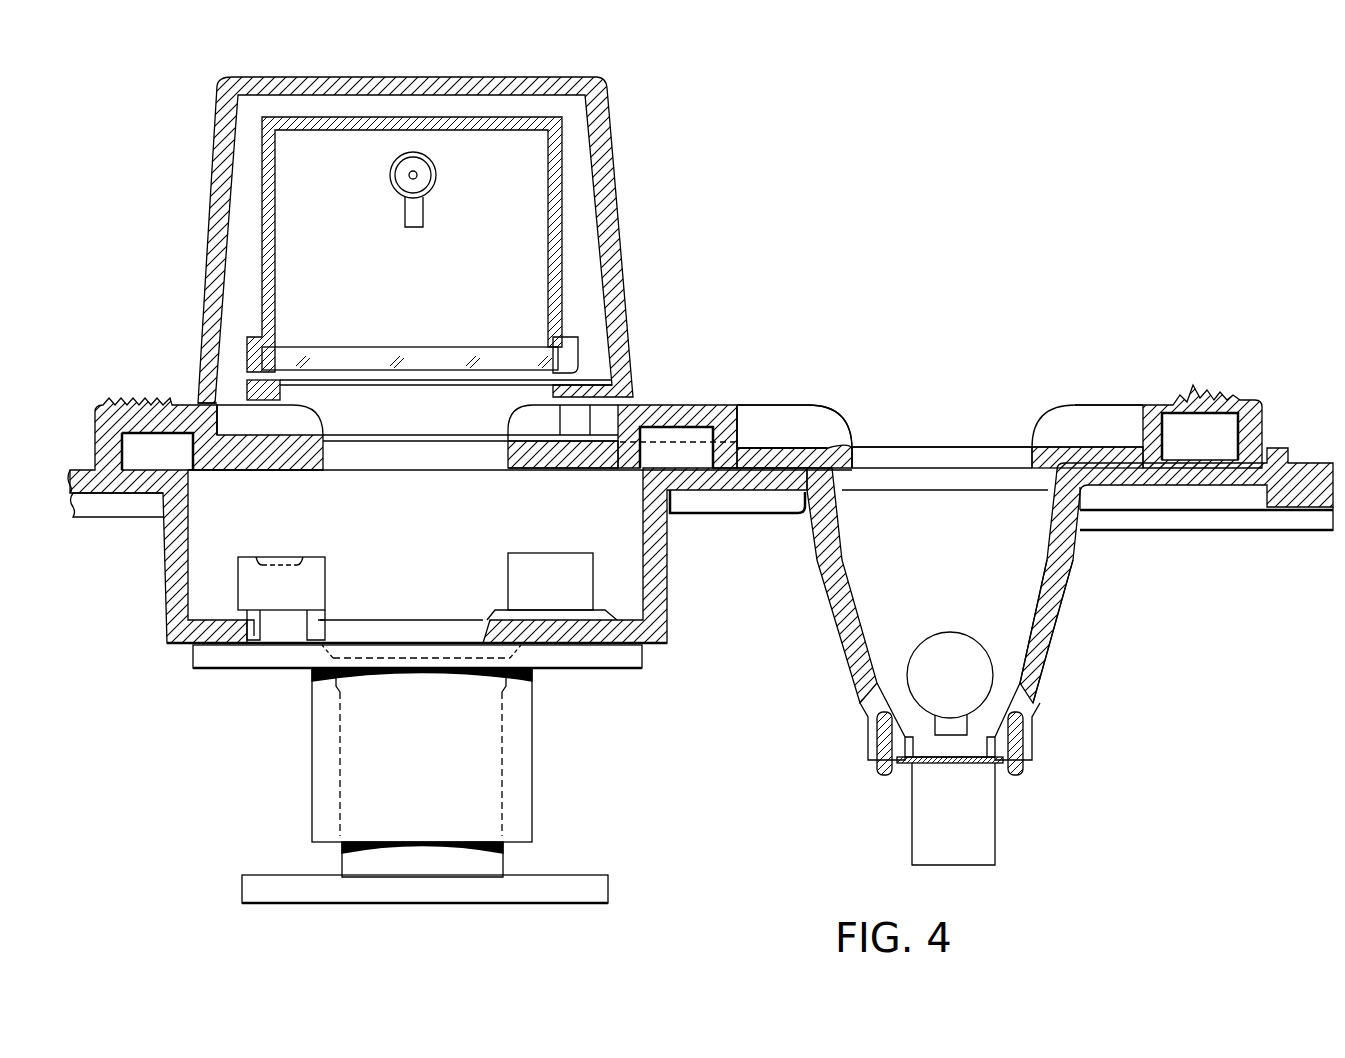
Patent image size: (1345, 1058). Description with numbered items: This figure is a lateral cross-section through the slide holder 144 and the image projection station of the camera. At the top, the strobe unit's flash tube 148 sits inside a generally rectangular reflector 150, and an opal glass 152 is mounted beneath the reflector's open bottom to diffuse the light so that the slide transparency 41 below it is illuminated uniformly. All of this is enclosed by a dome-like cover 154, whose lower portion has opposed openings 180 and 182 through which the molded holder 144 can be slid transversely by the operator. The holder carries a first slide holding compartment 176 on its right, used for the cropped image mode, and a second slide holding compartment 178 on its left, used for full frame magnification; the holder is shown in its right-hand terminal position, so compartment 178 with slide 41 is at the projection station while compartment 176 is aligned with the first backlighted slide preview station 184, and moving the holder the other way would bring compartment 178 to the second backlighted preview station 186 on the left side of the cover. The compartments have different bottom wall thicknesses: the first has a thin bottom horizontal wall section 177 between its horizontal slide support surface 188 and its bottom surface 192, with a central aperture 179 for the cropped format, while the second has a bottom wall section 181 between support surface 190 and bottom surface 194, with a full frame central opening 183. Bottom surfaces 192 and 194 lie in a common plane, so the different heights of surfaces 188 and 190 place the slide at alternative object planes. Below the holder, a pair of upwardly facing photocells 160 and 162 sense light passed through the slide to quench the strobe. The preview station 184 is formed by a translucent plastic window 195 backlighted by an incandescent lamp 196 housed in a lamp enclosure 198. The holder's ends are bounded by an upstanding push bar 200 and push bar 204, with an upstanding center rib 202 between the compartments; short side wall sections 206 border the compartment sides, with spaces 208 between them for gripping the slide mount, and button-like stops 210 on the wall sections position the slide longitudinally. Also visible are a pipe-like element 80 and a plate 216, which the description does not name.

The slide transparency 41 is at (300, 472).
The drain pipe 80 is at (533, 746).
The slide holder 144 is at (1117, 392).
The flash tube 148 is at (437, 171).
The reflector 150 is at (562, 260).
The opal glass 152 is at (444, 357).
The dome-like cover 154 is at (607, 238).
The photocell 160 is at (326, 567).
The photocell 162 is at (507, 575).
The first slide holding compartment 176 is at (826, 393).
The bottom horizontal wall section 177 is at (850, 432).
The second slide holding compartment 178 is at (290, 416).
The central aperture 179 is at (978, 448).
The opening 180 is at (198, 398).
The bottom wall section 181 is at (314, 466).
The opening 182 is at (625, 410).
The central opening 183 is at (358, 471).
The first backlighted slide preview station 184 is at (926, 497).
The second backlighted preview station 186 is at (432, 440).
The horizontal slide support surface 188 is at (775, 446).
The horizontal slide support surface 190 is at (240, 452).
The bottom surface 192 is at (763, 478).
The bottom surface 194 is at (545, 470).
The translucent plastic window 195 is at (968, 483).
The incandescent lamp 196 is at (968, 650).
The lamp enclosure 198 is at (1062, 598).
The push bar 200 is at (1212, 392).
The center rib 202 is at (736, 410).
The push bar 204 is at (112, 405).
The side wall section 206 is at (307, 425).
The space 208 is at (913, 430).
The button-like stop 210 is at (580, 432).
The mounting plate 216 is at (1277, 450).